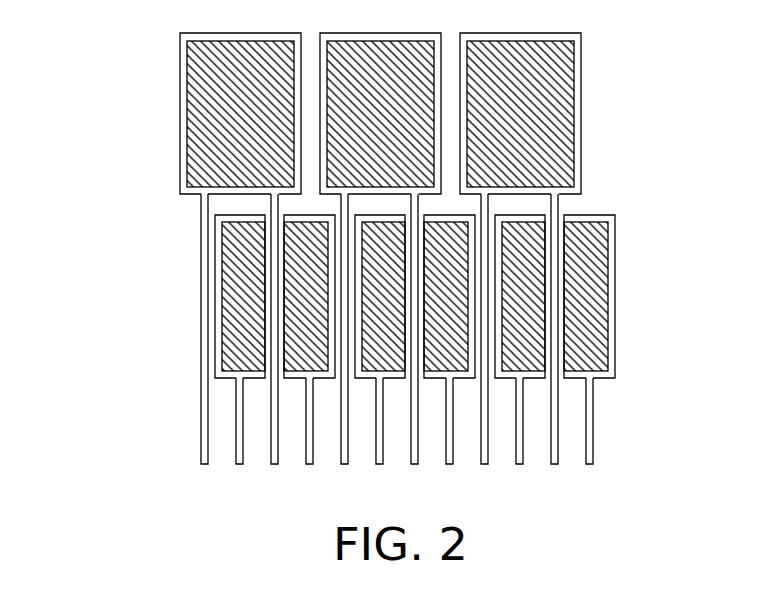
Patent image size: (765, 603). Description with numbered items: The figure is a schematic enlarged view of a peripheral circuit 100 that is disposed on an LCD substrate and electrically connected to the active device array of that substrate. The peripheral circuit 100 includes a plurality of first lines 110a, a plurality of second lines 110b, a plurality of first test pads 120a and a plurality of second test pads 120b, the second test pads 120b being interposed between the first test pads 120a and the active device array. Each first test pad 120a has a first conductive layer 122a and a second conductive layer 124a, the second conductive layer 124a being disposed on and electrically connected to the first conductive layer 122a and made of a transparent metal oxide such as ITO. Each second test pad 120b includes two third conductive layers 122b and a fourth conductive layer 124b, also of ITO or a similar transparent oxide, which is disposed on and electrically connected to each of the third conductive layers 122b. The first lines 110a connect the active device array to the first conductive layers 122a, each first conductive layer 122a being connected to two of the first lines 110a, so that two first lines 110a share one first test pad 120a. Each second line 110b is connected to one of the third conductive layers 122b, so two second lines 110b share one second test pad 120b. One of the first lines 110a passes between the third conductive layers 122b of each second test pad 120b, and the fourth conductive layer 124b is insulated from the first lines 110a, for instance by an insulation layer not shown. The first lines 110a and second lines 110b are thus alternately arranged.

The peripheral circuit 100 is at (682, 507).
The first lines 110a is at (202, 461).
The second lines 110b is at (240, 466).
The first test pads 120a is at (112, 75).
The second test pads 120b is at (112, 265).
The first conductive layer 122a is at (185, 91).
The third conductive layers 122b is at (219, 277).
The second conductive layer 124a is at (204, 123).
The fourth conductive layer 124b is at (232, 309).